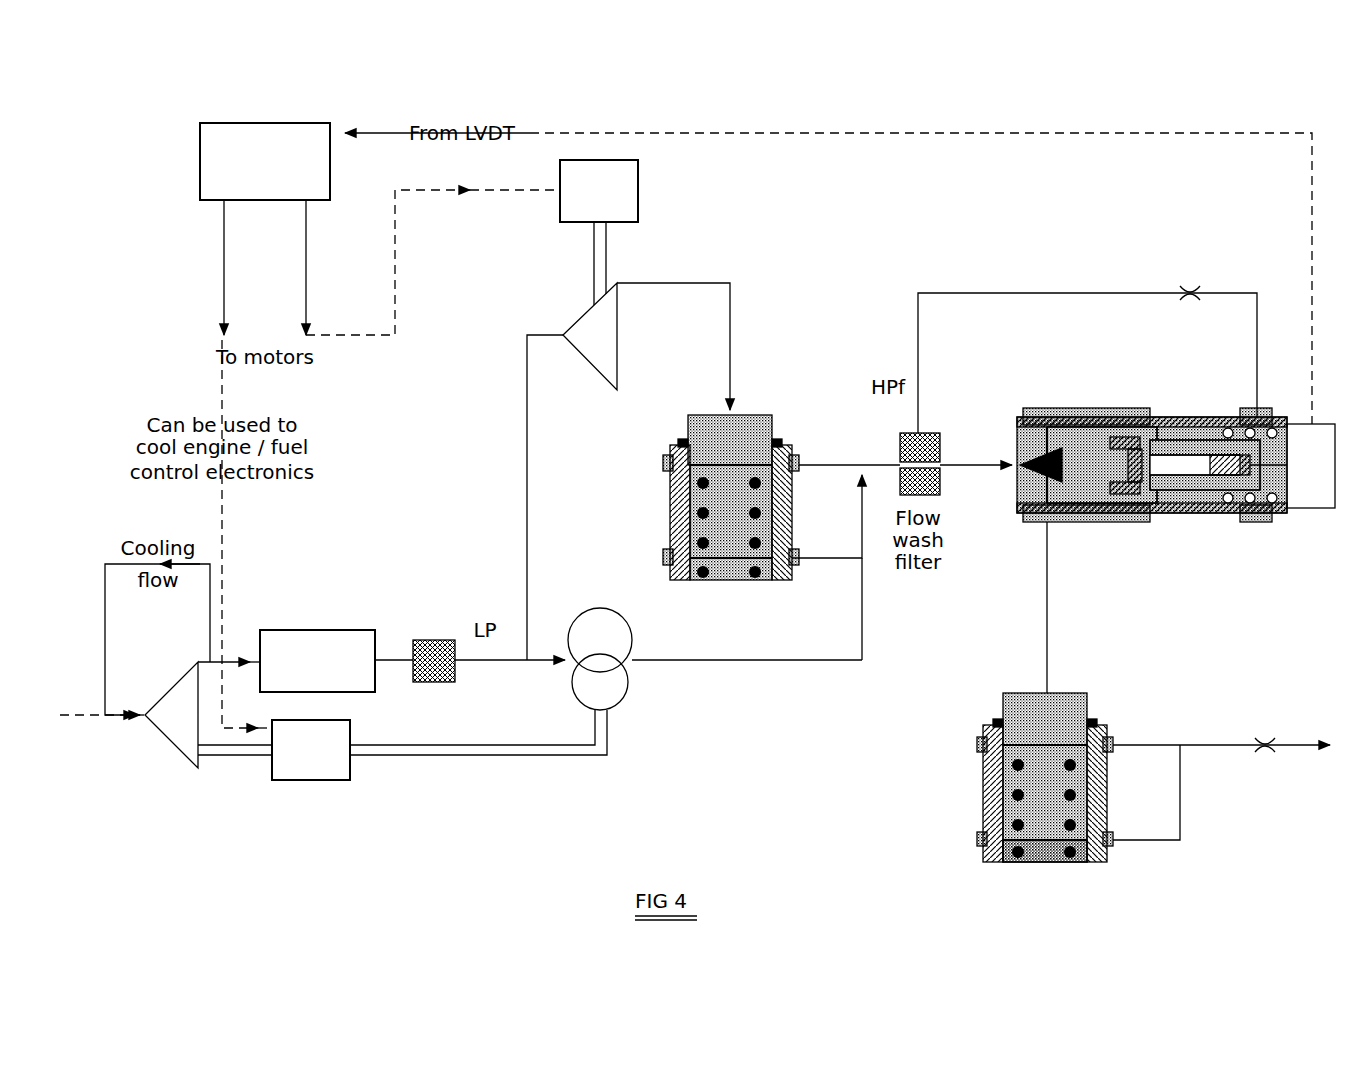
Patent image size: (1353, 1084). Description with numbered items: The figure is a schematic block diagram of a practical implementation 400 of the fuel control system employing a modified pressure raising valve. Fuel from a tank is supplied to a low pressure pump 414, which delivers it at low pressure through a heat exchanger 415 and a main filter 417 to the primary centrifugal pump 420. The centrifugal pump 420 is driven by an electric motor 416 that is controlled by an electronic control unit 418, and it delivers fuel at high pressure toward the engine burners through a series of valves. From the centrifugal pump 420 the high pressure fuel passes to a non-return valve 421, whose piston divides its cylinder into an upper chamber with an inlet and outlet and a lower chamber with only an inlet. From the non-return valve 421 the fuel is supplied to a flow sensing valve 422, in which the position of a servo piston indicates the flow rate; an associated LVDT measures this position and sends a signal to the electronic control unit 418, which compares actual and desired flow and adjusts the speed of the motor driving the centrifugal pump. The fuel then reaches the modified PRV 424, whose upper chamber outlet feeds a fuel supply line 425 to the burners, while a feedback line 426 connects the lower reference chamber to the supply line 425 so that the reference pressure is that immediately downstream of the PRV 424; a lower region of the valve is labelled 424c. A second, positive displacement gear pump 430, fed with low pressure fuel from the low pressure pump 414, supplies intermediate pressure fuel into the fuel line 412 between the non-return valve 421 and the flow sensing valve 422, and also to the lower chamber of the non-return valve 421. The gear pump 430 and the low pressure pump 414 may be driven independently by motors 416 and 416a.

The practical implementation of the control system 400 is at (233, 847).
The fuel line 412 is at (543, 340).
The low pressure pump 414 is at (170, 724).
The heat exchanger 415 is at (287, 640).
The electric motor 416 is at (640, 188).
The motor 416a is at (318, 772).
The main filter 417 is at (420, 640).
The electronic control unit 418 is at (210, 180).
The primary centrifugal pump 420 is at (585, 330).
The non-return valve 421 is at (772, 415).
The flow sensing valve 422 is at (1078, 410).
The modified PRV 424 is at (1085, 862).
The valve outlet chamber 424c is at (1018, 862).
The fuel supply line 425 is at (1143, 745).
The feedback line 426 is at (1180, 797).
The gear pump 430 is at (615, 697).